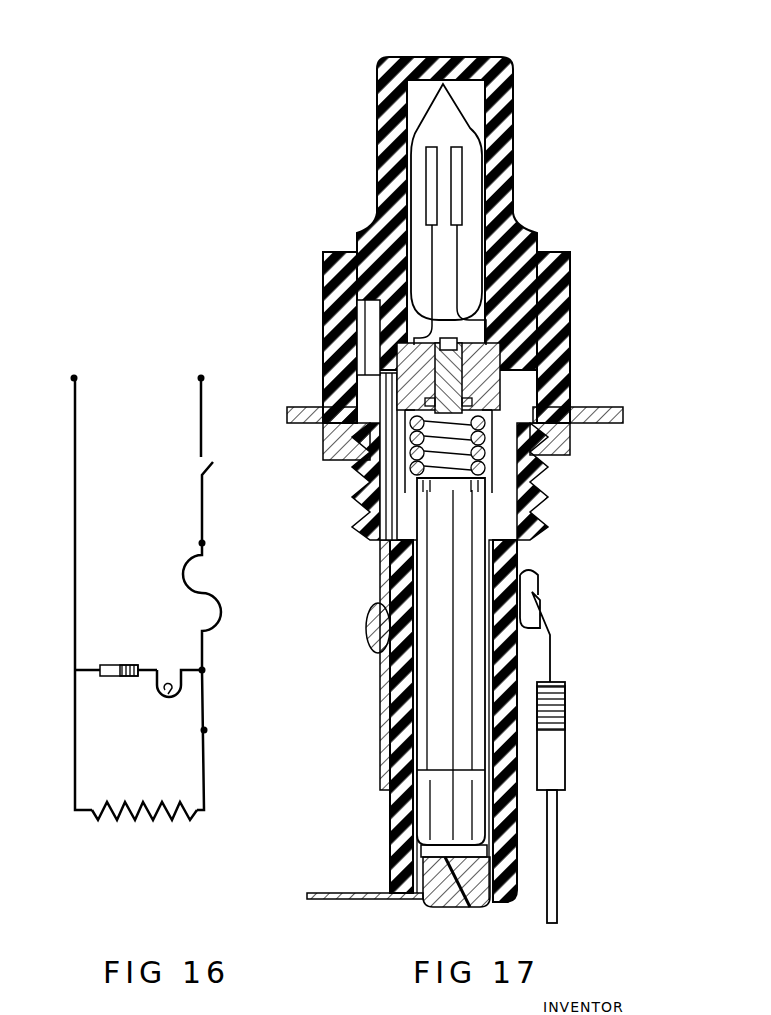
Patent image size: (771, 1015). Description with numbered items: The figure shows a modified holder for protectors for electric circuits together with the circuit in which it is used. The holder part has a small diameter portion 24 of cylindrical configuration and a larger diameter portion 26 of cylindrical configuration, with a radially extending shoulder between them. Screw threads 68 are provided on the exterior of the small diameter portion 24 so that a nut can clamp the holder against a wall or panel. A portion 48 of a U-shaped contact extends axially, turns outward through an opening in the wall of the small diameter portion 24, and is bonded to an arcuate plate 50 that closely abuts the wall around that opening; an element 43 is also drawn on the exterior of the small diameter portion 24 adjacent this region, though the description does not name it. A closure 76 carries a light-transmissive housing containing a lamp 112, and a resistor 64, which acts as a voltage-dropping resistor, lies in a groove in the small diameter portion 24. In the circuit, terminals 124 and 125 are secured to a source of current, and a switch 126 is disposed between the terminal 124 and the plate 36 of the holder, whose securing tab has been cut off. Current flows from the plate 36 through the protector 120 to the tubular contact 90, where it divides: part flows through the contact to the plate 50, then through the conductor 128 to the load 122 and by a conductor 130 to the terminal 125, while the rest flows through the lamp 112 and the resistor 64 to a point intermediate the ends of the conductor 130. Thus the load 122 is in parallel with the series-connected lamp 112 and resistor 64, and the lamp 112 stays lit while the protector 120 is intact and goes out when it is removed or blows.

In FIG. 16, the terminal 125 is at (75, 375).
In FIG. 16, the terminal 124 is at (202, 375).
In FIG. 16, the switch 126 is at (200, 463).
In FIG. 16, the plate 36 is at (204, 543).
In FIG. 17, the plate 36 is at (390, 902).
In FIG. 16, the protector for electric circuits 120 is at (183, 577).
In FIG. 17, the protector for electric circuits 120 is at (463, 593).
In FIG. 16, the resistor 64 is at (128, 665).
In FIG. 17, the resistor 64 is at (567, 730).
In FIG. 16, the tubular contact 90 is at (205, 670).
In FIG. 16, the lamp 112 is at (162, 697).
In FIG. 17, the lamp 112 is at (418, 183).
In FIG. 16, the plate 50 is at (207, 730).
In FIG. 17, the plate 50 is at (382, 690).
In FIG. 16, the conductor 130 is at (76, 768).
In FIG. 16, the conductor 128 is at (208, 778).
In FIG. 16, the load 122 is at (150, 817).
In FIG. 17, the closure 76 is at (560, 144).
In FIG. 17, the larger diameter portion 26 is at (570, 300).
In FIG. 17, the screw threads 68 is at (363, 512).
In FIG. 17, the portion of the contact 48 is at (380, 580).
In FIG. 17, the spring clip 43 is at (372, 647).
In FIG. 17, the small diameter portion 24 is at (395, 810).